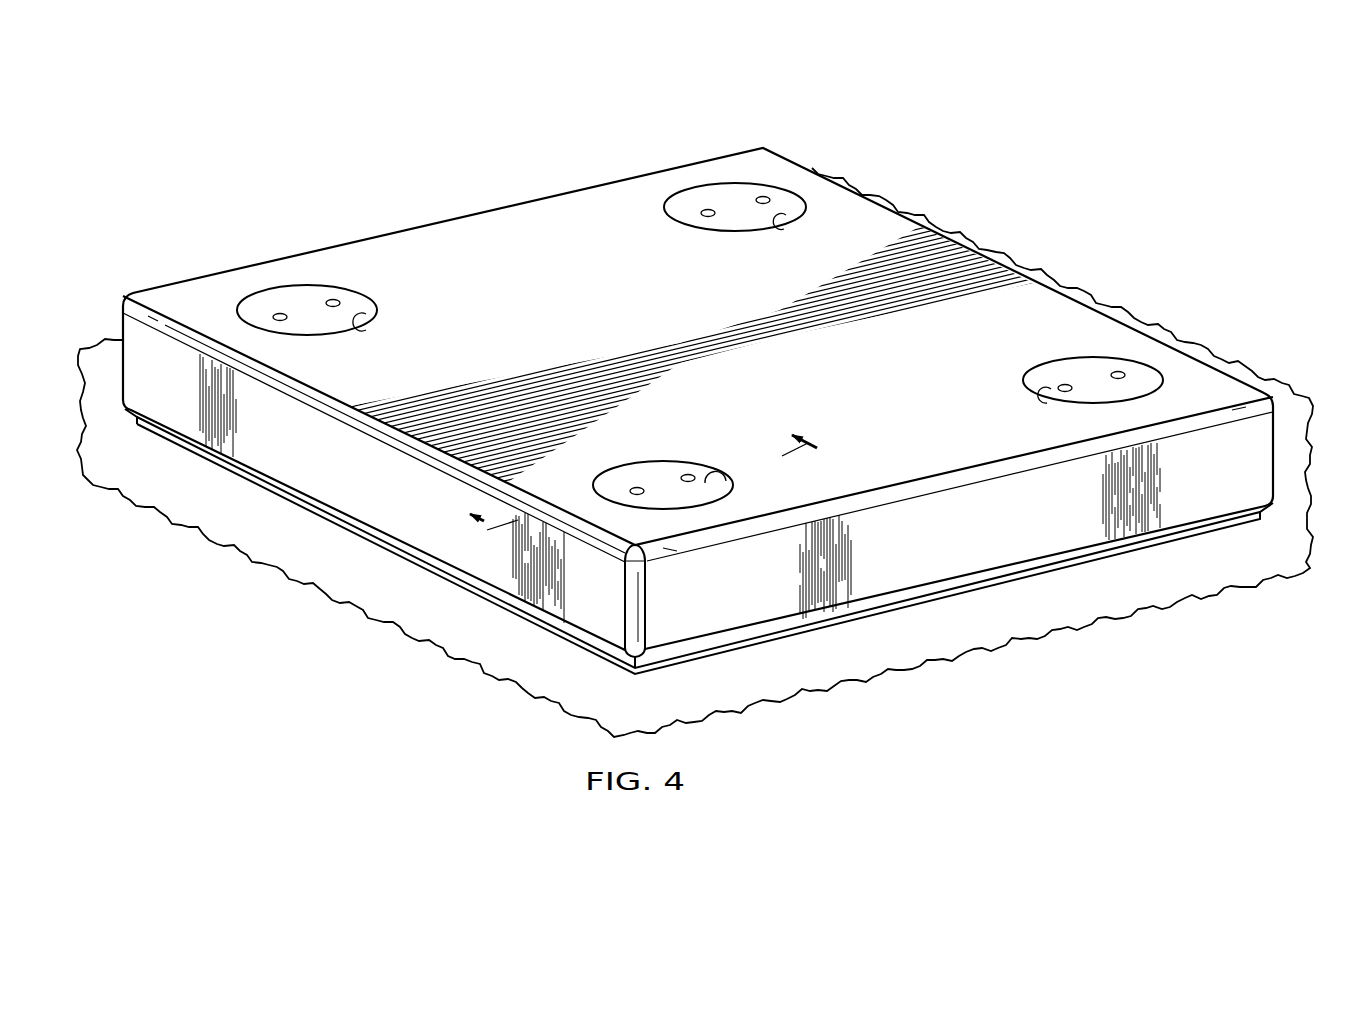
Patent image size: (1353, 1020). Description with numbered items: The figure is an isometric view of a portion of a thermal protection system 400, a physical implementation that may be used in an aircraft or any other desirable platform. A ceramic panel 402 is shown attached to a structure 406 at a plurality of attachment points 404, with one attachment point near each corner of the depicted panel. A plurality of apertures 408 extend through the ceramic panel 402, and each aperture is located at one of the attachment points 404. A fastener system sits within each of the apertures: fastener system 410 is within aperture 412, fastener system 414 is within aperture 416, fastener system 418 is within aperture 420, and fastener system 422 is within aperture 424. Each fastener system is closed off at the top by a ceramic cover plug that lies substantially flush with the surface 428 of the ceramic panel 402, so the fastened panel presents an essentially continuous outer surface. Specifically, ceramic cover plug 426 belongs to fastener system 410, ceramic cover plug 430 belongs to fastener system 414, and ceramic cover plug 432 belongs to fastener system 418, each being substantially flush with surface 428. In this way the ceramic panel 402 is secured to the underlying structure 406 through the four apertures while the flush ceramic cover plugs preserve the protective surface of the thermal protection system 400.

The thermal protection system 400 is at (430, 130).
The ceramic panel 402 is at (445, 223).
The plurality of attachment points 404 is at (300, 277).
The structure 406 is at (655, 715).
The plurality of apertures 408 is at (722, 178).
The fastener system 410 is at (613, 453).
The aperture 412 is at (707, 472).
The fastener system 414 is at (388, 320).
The aperture 416 is at (353, 327).
The fastener system 418 is at (815, 217).
The aperture 420 is at (768, 228).
The fastener system 422 is at (1067, 367).
The aperture 424 is at (1040, 392).
The ceramic cover plug 426 is at (653, 468).
The surface 428 is at (523, 213).
The ceramic cover plug 430 is at (360, 300).
The ceramic cover plug 432 is at (727, 225).